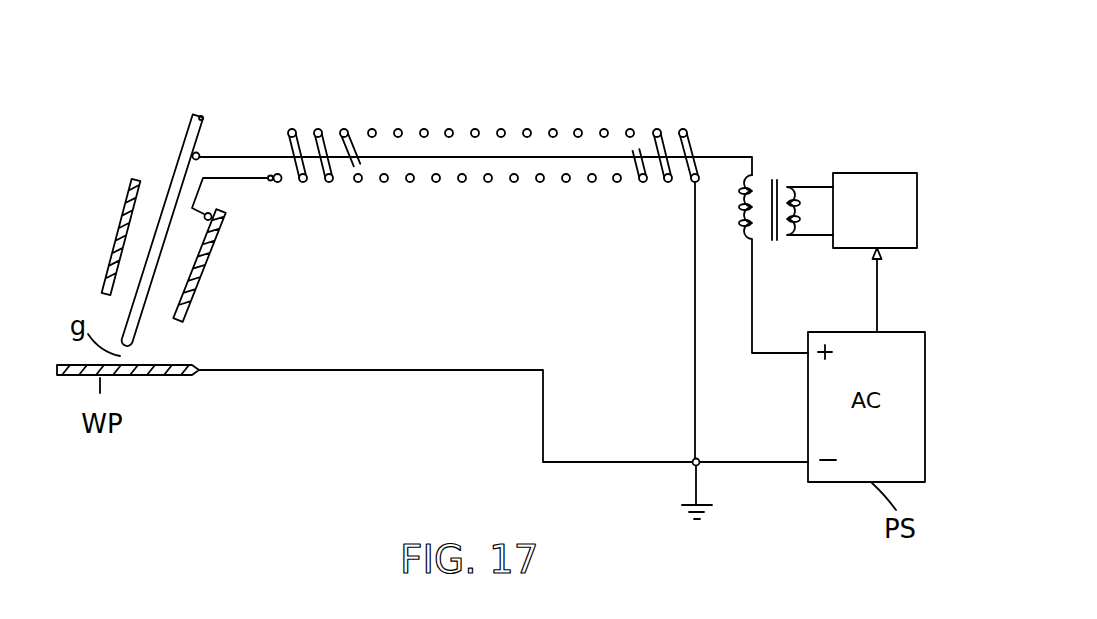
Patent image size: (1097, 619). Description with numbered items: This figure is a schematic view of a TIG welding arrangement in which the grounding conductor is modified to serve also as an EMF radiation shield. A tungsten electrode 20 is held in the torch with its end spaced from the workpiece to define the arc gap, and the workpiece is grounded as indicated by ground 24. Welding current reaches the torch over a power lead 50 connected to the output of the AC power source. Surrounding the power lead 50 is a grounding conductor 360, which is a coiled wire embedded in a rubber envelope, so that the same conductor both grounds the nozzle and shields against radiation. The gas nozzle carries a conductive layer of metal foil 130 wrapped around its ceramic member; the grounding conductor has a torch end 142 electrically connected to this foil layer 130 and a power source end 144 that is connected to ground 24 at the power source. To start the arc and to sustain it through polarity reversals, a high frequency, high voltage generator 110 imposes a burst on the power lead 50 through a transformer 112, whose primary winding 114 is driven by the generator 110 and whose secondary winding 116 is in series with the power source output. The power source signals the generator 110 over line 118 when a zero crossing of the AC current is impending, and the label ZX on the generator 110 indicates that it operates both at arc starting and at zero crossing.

The tungsten electrode 20 is at (171, 173).
The power lead 50 is at (248, 156).
The grounding conductor 360 is at (346, 129).
The torch end 142 is at (242, 179).
The conductive layer of metal foil 130 is at (198, 282).
The power source end 144 is at (692, 183).
The transformer 112 is at (781, 173).
The high frequency, high voltage generator 110 is at (894, 172).
The secondary winding 116 is at (748, 226).
The primary winding 114 is at (795, 226).
The line 118 is at (878, 297).
The ground 24 is at (708, 515).